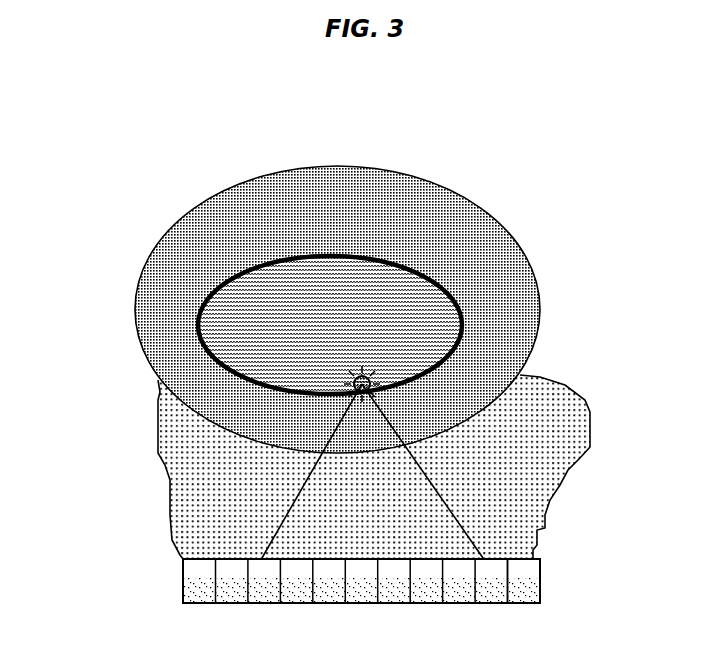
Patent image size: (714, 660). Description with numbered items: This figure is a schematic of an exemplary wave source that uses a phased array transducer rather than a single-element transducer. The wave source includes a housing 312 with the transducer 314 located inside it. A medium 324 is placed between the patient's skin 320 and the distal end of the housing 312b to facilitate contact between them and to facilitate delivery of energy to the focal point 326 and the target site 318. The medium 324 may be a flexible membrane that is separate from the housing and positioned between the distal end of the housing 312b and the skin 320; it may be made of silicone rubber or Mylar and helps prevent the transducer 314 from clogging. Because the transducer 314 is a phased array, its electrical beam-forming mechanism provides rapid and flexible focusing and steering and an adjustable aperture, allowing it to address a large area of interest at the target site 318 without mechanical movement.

The housing 312 is at (183, 593).
The distal end of the housing 312b is at (182, 566).
The transducer 314 is at (525, 580).
The target site 318 is at (463, 328).
The patient's skin 320 is at (200, 427).
The medium 324 is at (503, 465).
The focal point 326 is at (378, 377).